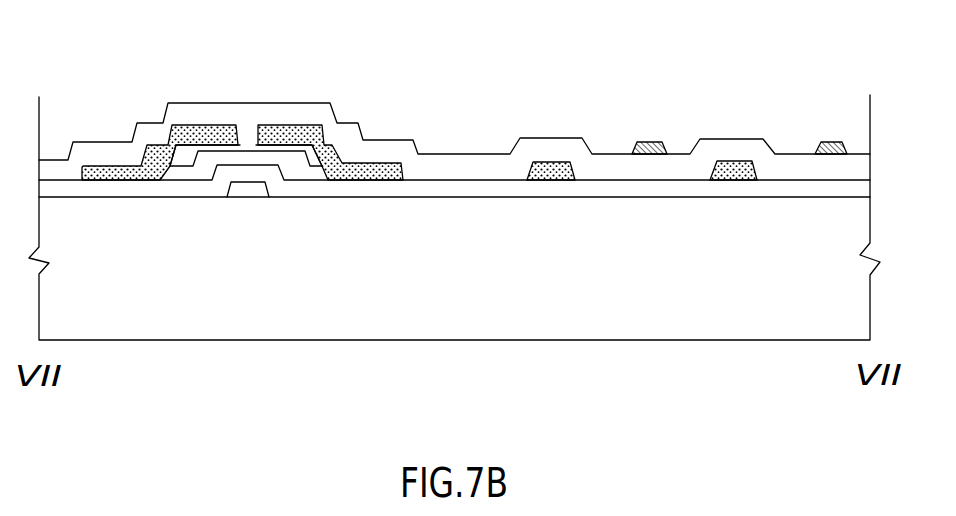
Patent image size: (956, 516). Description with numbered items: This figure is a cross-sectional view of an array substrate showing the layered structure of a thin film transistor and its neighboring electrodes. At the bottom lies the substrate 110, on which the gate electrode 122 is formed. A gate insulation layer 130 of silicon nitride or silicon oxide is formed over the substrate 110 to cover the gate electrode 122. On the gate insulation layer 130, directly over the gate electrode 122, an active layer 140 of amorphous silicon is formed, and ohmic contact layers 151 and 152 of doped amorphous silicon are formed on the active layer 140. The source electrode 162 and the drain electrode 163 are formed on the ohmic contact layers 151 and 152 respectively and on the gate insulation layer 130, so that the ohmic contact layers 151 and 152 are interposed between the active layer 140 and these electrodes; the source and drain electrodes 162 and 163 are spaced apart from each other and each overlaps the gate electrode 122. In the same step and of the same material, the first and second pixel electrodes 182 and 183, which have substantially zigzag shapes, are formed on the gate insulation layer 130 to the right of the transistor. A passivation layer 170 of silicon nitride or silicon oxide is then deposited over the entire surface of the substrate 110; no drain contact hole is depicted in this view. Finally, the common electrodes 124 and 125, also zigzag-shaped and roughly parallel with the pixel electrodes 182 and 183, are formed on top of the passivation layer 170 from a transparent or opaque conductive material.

The substrate 110 is at (632, 325).
The gate electrode 122 is at (248, 188).
The common electrode 124 is at (832, 141).
The common electrode 125 is at (653, 147).
The gate insulation layer 130 is at (376, 186).
The active layer 140 is at (247, 158).
The ohmic contact layer 151 is at (160, 148).
The ohmic contact layer 152 is at (275, 143).
The source electrode 162 is at (203, 123).
The drain electrode 163 is at (300, 124).
The passivation layer 170 is at (93, 148).
The first pixel electrode 182 is at (733, 168).
The second pixel electrode 183 is at (550, 168).